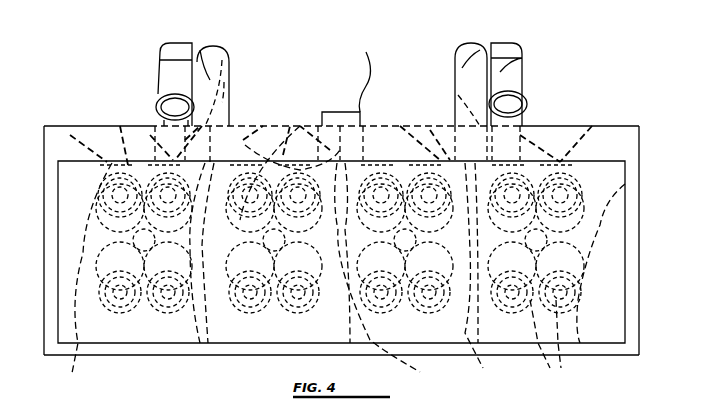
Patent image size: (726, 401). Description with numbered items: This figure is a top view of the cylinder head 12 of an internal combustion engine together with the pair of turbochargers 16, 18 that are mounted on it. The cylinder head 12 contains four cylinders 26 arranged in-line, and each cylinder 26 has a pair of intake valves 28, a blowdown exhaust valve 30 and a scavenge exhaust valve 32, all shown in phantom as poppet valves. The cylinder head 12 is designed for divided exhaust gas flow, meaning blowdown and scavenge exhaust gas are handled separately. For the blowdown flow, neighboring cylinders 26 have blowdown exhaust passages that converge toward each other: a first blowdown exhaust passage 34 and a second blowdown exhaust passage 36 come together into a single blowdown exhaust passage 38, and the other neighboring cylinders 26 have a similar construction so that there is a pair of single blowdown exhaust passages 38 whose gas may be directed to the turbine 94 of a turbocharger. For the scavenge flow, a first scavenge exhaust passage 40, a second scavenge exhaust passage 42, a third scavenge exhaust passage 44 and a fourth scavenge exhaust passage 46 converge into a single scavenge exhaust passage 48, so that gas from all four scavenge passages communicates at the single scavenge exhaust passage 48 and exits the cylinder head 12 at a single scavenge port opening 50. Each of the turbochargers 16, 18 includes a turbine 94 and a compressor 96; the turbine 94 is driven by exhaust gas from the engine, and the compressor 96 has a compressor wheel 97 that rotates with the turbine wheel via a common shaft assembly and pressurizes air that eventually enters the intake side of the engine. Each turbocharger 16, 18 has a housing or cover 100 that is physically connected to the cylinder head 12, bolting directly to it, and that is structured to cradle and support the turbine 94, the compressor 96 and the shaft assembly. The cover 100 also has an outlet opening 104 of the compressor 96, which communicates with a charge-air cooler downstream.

The cylinder head 12 is at (639, 289).
The turbocharger 16 is at (503, 44).
The turbocharger 18 is at (212, 50).
The cylinder 26 is at (626, 184).
The intake valve 28 is at (550, 343).
The blowdown exhaust valve 30 is at (122, 125).
The scavenge exhaust valve 32 is at (64, 125).
The first blowdown exhaust passage 34 is at (146, 118).
The second blowdown exhaust passage 36 is at (250, 125).
The single blowdown exhaust passage 38 is at (233, 108).
The first scavenge exhaust passage 40 is at (96, 125).
The second scavenge exhaust passage 42 is at (312, 125).
The third scavenge exhaust passage 44 is at (378, 125).
The fourth scavenge exhaust passage 46 is at (571, 125).
The single scavenge exhaust passage 48 is at (352, 118).
The single scavenge port opening 50 is at (367, 74).
The turbine 94 is at (196, 52).
The compressor 96 is at (163, 88).
The compressor wheel 97 is at (229, 62).
The cover 100 is at (175, 52).
The outlet opening 104 is at (515, 99).